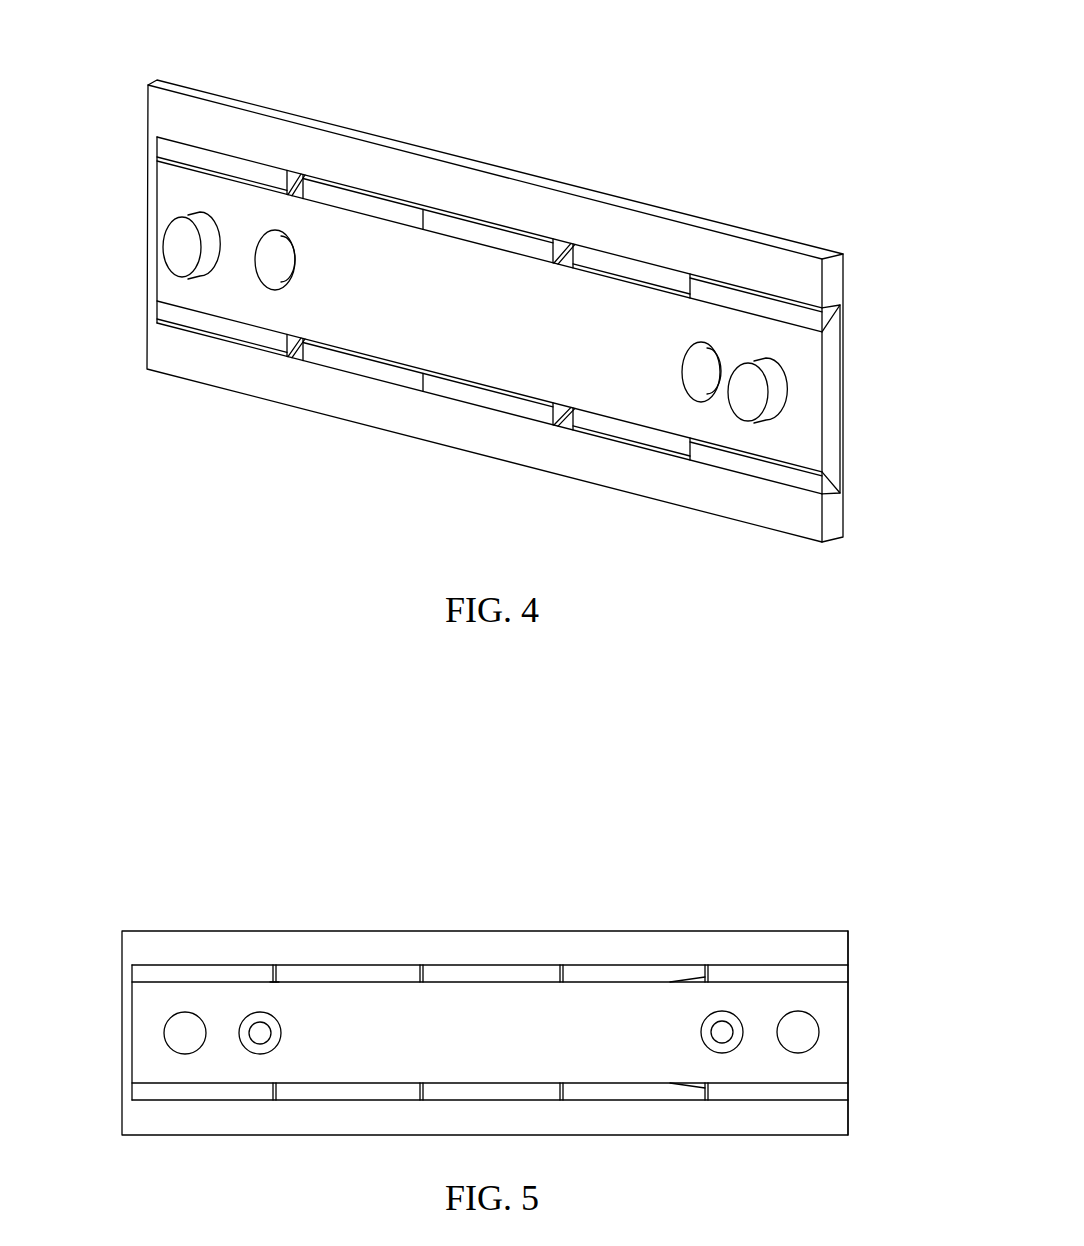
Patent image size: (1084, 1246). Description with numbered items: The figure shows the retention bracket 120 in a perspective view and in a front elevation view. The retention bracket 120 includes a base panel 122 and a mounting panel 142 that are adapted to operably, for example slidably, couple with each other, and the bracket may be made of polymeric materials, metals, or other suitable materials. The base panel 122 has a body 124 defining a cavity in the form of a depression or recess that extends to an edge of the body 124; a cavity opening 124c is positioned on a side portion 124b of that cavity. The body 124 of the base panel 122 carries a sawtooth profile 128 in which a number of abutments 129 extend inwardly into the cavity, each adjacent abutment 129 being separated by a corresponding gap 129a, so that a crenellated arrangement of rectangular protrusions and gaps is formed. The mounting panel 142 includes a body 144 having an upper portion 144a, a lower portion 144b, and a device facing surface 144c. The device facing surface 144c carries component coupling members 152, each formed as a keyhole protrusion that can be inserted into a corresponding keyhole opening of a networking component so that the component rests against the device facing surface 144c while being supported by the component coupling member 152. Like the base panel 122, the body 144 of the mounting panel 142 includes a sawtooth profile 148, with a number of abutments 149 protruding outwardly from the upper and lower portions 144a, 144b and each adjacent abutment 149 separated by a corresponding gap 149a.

In FIG. 4, the retention bracket 120 is at (307, 76).
In FIG. 5, the retention bracket 120 is at (128, 915).
In FIG. 4, the base panel 122 is at (425, 155).
In FIG. 5, the base panel 122 is at (120, 1050).
In FIG. 4, the body 124 is at (478, 180).
In FIG. 5, the body 124 is at (135, 943).
In FIG. 4, the side portion 124b is at (828, 283).
In FIG. 5, the side portion 124b is at (852, 963).
In FIG. 4, the cavity opening 124c is at (828, 365).
In FIG. 4, the sawtooth profile 128 is at (291, 168).
In FIG. 5, the sawtooth profile 128 is at (272, 963).
In FIG. 4, the abutment 129 is at (518, 240).
In FIG. 4, the gap 129a is at (619, 268).
In FIG. 5, the mounting panel 142 is at (140, 1025).
In FIG. 5, the body 144 is at (148, 998).
In FIG. 5, the upper portion 144a is at (852, 978).
In FIG. 4, the lower portion 144b is at (828, 328).
In FIG. 5, the lower portion 144b is at (852, 1092).
In FIG. 4, the device facing surface 144c is at (436, 301).
In FIG. 5, the device facing surface 144c is at (609, 1047).
In FIG. 4, the sawtooth profile 148 is at (566, 270).
In FIG. 5, the sawtooth profile 148 is at (280, 987).
In FIG. 4, the abutment 149 is at (305, 181).
In FIG. 4, the gap 149a is at (680, 286).
In FIG. 4, the component coupling member 152 is at (180, 250).
In FIG. 5, the component coupling member 152 is at (187, 1032).